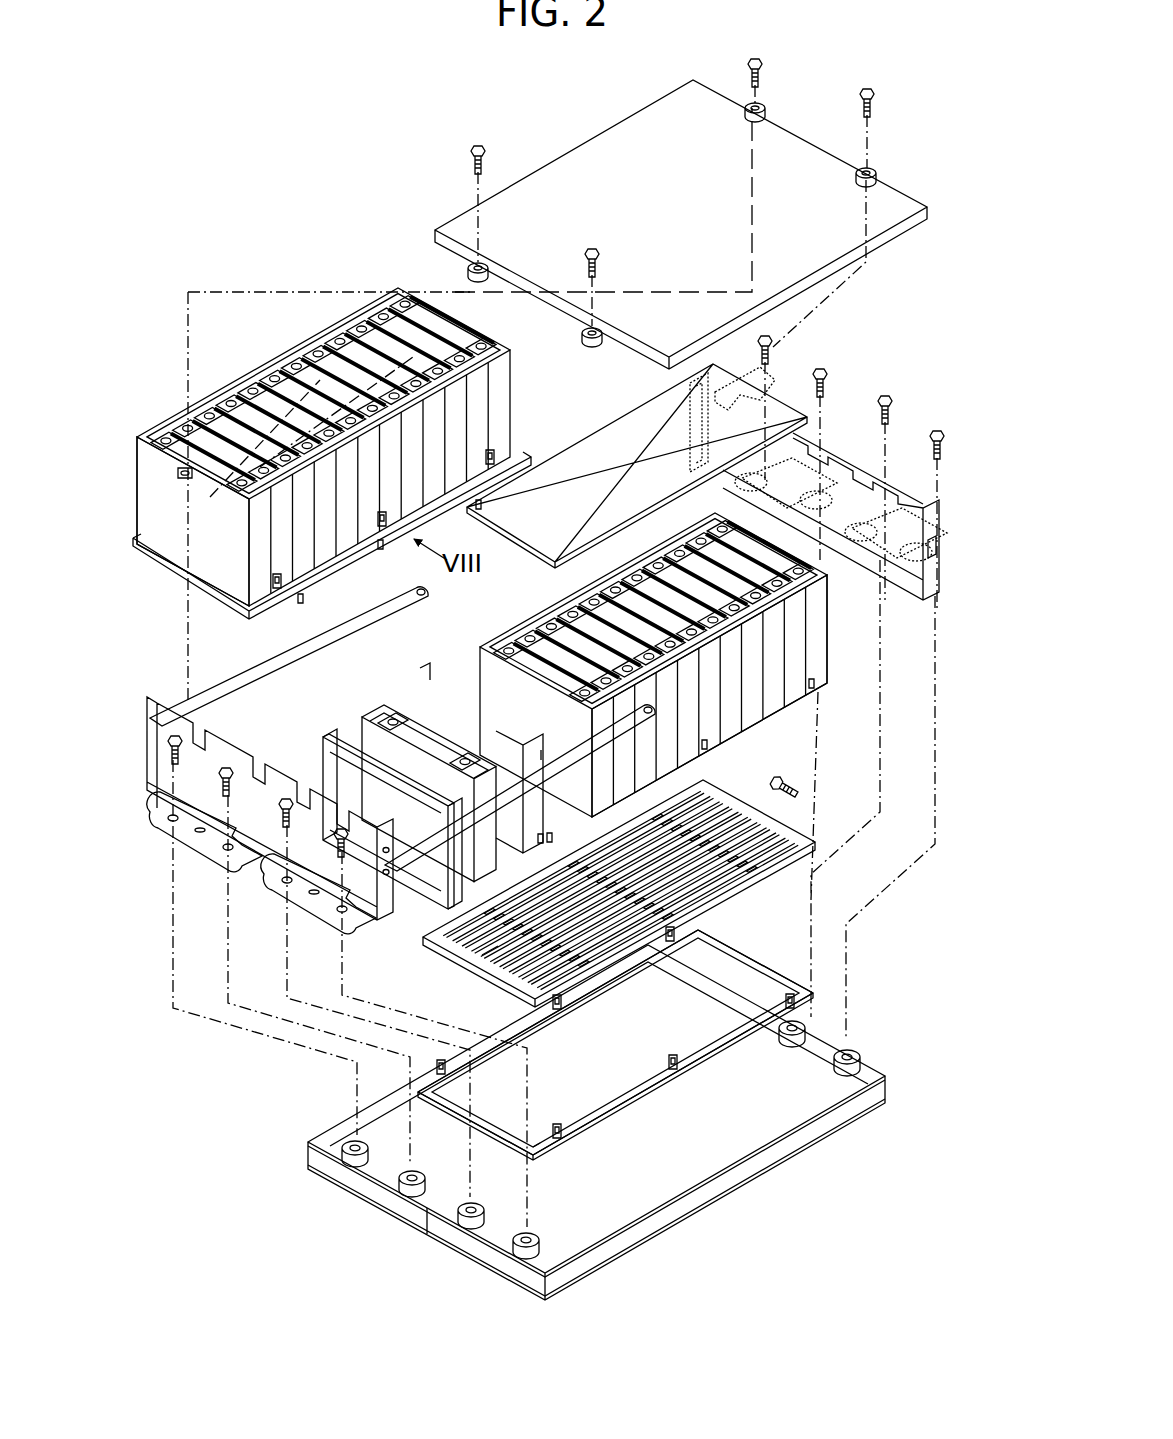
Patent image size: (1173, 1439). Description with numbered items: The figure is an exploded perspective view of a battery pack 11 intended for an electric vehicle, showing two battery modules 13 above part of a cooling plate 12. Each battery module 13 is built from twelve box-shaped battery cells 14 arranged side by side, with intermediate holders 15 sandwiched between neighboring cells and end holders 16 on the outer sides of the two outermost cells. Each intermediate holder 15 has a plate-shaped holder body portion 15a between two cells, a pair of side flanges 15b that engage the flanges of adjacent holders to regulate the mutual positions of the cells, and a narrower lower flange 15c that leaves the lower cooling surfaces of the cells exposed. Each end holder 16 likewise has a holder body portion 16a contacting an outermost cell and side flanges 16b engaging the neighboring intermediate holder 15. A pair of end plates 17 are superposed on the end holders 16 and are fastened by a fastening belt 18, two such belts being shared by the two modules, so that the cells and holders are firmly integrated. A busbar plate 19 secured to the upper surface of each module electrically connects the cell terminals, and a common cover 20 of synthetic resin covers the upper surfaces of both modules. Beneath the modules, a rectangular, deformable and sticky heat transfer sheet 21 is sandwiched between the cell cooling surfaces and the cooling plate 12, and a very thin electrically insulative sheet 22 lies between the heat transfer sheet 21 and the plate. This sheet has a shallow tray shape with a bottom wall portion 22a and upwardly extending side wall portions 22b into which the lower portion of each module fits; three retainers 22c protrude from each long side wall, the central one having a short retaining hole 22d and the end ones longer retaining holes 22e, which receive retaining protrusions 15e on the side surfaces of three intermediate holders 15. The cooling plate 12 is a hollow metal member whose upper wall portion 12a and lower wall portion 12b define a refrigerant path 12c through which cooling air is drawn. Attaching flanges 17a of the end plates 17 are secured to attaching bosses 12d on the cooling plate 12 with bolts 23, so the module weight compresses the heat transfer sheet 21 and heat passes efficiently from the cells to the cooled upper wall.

The battery pack 11 is at (358, 186).
The cooling plate 12 is at (762, 1180).
The upper wall portion 12a is at (634, 1203).
The lower wall portion 12b is at (357, 1197).
The refrigerant path 12c is at (453, 1233).
The attaching bosses 12d is at (805, 1017).
The battery module 13 is at (283, 335).
The battery cells 14 is at (378, 357).
The intermediate holders 15 is at (322, 572).
The holder body portion 15a is at (457, 712).
The side flanges 15b is at (423, 668).
The lower flange 15c is at (488, 958).
The retaining protrusions 15e is at (481, 506).
The end holders 16 is at (512, 372).
The holder body portion 16a is at (330, 768).
The side flanges 16b is at (326, 737).
The end plates 17 is at (806, 438).
The attaching flanges 17a is at (910, 530).
The fastening belt 18 is at (245, 685).
The busbar plate 19 is at (636, 420).
The cover 20 is at (604, 147).
The heat transfer sheet 21 is at (772, 870).
The electrically insulative sheet 22 is at (195, 620).
The bottom wall portion 22a is at (595, 1098).
The side wall portions 22b is at (530, 1050).
The retainers 22c is at (497, 452).
The retaining hole 22d is at (328, 450).
The retaining holes 22e is at (489, 450).
The bolts 23 is at (820, 372).